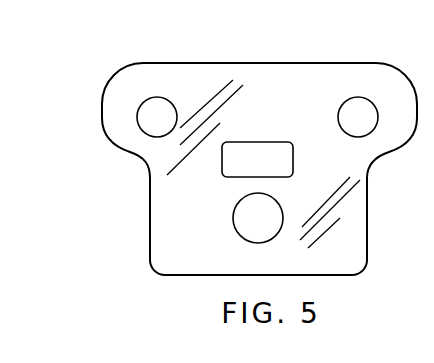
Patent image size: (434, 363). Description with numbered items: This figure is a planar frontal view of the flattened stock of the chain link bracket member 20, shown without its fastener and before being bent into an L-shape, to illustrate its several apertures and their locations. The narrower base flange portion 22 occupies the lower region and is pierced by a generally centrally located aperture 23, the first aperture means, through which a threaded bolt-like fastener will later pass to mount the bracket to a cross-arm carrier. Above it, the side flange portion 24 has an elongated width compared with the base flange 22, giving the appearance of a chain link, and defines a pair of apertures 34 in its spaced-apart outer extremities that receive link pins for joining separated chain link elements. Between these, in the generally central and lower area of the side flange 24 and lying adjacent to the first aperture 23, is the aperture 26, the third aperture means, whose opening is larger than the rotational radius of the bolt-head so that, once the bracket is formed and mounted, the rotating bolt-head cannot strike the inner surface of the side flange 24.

The chain link bracket member 20 is at (187, 68).
The pair of apertures 34 is at (145, 116).
The side flange portion 24 is at (265, 106).
The base flange portion 22 is at (175, 261).
The aperture 26 is at (290, 160).
The aperture 23 is at (234, 218).